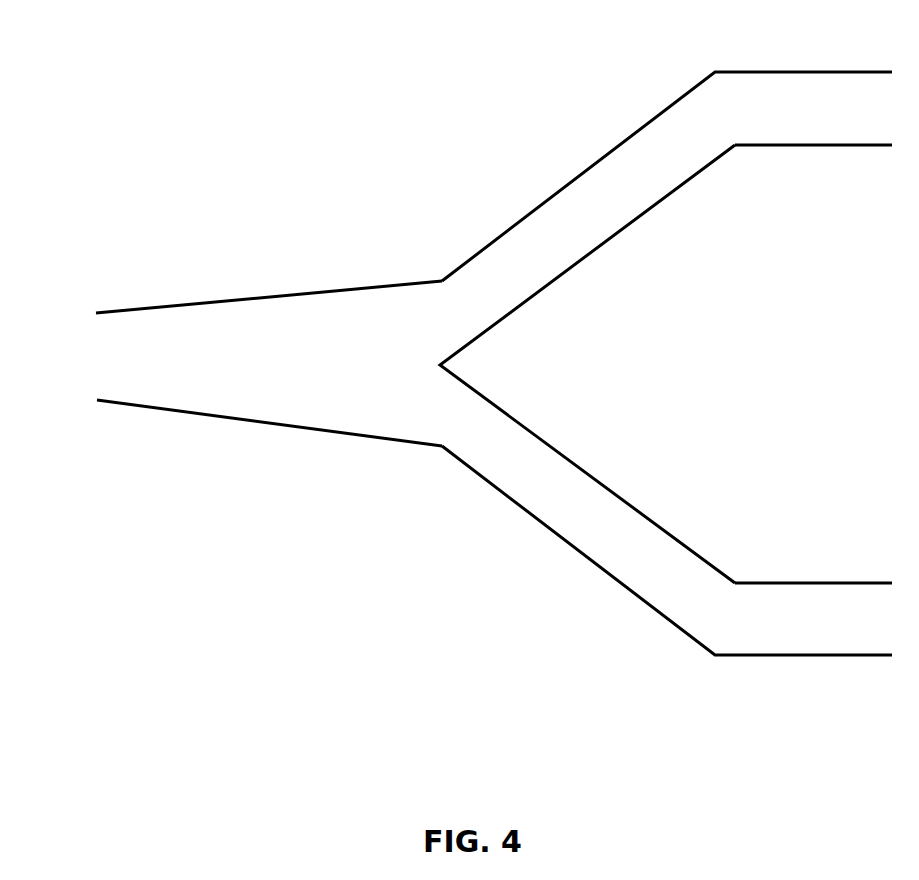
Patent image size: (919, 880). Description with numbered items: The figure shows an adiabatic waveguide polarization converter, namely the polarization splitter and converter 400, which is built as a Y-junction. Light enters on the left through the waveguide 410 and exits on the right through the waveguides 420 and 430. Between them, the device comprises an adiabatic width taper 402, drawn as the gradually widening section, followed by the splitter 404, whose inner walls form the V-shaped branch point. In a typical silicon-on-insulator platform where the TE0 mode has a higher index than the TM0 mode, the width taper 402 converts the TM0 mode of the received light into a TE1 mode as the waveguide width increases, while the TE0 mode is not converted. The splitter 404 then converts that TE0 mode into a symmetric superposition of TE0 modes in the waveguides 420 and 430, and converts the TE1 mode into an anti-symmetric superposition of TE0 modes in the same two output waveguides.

The polarization splitter and converter 400 is at (291, 191).
The adiabatic width taper 402 is at (230, 437).
The splitter 404 is at (570, 300).
The waveguide 410 is at (239, 418).
The waveguide 420 is at (789, 113).
The waveguide 430 is at (790, 620).